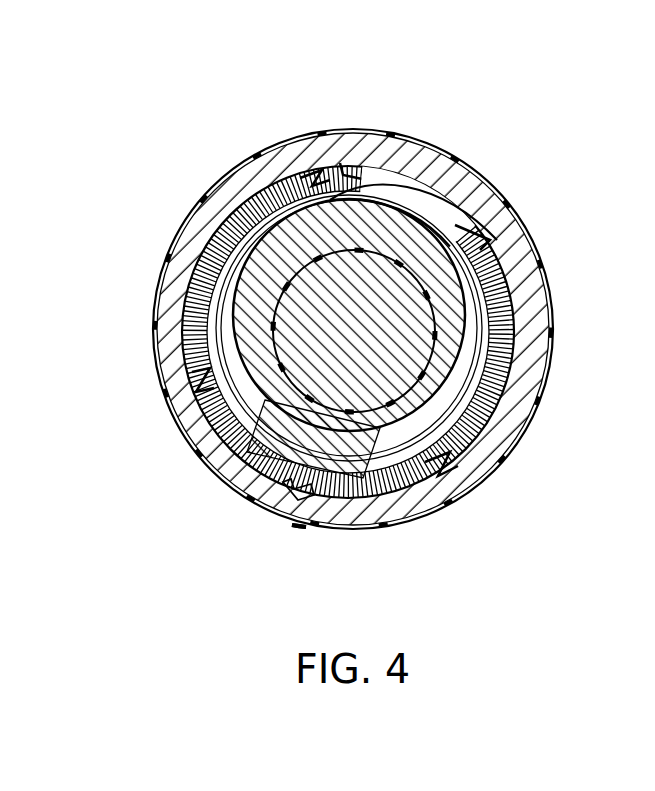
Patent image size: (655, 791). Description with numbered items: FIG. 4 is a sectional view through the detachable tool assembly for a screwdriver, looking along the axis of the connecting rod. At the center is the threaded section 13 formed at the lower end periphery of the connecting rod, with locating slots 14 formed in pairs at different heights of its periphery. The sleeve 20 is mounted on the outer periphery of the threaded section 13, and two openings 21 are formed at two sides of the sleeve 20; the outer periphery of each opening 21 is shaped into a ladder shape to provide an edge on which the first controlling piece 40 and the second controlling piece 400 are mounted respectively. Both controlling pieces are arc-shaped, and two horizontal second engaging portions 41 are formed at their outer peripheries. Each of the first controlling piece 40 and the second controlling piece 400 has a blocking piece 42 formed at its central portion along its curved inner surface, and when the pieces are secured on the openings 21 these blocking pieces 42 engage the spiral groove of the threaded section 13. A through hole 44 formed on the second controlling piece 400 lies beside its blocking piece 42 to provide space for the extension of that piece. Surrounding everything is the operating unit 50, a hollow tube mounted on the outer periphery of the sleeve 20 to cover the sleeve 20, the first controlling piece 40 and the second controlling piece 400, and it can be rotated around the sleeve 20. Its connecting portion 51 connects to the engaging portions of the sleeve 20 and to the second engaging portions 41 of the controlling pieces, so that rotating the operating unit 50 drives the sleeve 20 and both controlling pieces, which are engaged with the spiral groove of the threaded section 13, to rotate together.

The threaded section 13 is at (455, 318).
The locating slots 14 is at (445, 210).
The sleeve 20 is at (213, 238).
The openings 21 is at (379, 323).
The first controlling piece 40 is at (385, 135).
The second engaging portions 41 is at (283, 513).
The blocking piece 42 is at (415, 517).
The through hole 44 is at (263, 465).
The operating unit 50 is at (531, 443).
The connecting portion 51 is at (299, 526).
The second controlling piece 400 is at (190, 382).